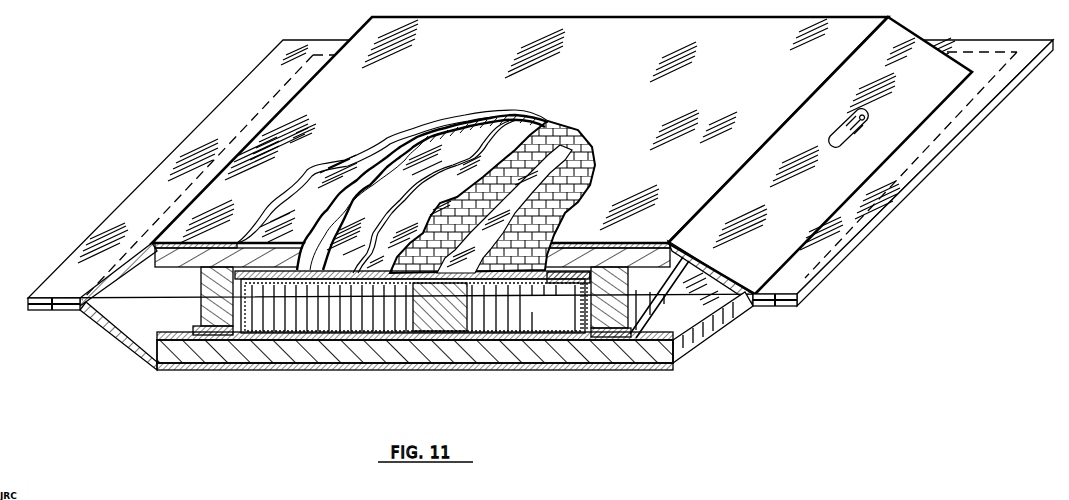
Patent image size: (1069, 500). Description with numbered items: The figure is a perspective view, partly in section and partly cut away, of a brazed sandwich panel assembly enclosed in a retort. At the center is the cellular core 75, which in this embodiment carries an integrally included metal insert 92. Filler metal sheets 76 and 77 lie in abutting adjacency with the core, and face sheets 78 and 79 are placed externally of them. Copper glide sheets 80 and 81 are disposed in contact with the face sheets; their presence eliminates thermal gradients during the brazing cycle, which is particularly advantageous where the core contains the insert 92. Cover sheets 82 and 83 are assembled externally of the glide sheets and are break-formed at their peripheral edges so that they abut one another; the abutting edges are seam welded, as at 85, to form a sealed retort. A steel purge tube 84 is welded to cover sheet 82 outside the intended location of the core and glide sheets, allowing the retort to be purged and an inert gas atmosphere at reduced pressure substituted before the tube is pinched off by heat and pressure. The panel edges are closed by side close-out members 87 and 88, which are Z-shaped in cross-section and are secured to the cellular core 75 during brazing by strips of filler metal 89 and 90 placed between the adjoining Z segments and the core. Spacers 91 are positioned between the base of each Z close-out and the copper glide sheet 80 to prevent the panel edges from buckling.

The cellular core 75 is at (379, 302).
The filler metal sheet 76 is at (464, 193).
The filler metal sheet 77 is at (257, 333).
The face sheet 78 is at (388, 215).
The face sheet 79 is at (458, 329).
The copper glide sheet 80 is at (327, 207).
The copper glide sheet 81 is at (165, 352).
The cover sheet 82 is at (322, 125).
The cover sheet 83 is at (250, 370).
The steel purge tube 84 is at (850, 130).
The seam weld 85 is at (50, 307).
The side close-out member 87 is at (188, 324).
The side close-out member 88 is at (645, 316).
The strip of filler metal 89 is at (585, 305).
The strip of filler metal 90 is at (560, 284).
The spacer 91 is at (212, 294).
The metal insert 92 is at (483, 212).